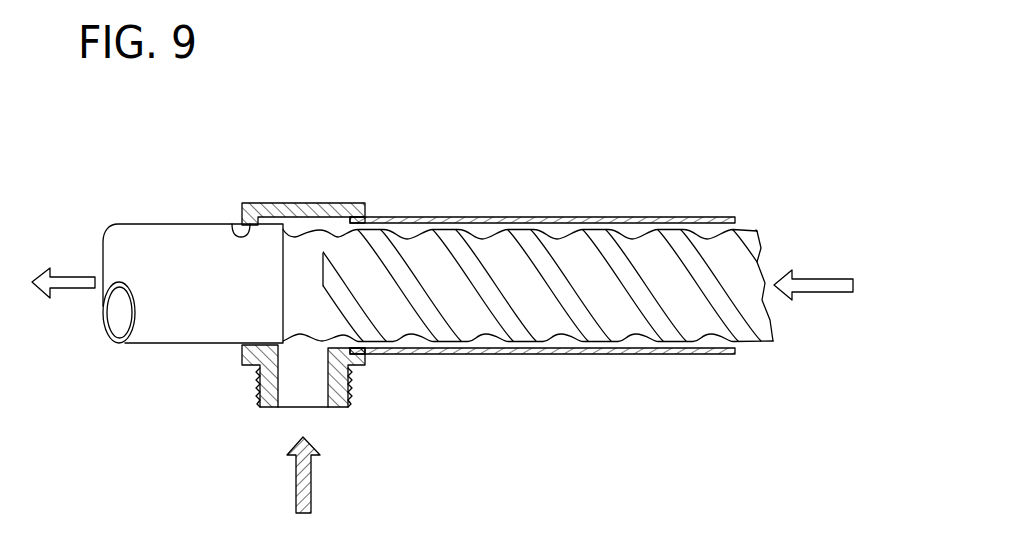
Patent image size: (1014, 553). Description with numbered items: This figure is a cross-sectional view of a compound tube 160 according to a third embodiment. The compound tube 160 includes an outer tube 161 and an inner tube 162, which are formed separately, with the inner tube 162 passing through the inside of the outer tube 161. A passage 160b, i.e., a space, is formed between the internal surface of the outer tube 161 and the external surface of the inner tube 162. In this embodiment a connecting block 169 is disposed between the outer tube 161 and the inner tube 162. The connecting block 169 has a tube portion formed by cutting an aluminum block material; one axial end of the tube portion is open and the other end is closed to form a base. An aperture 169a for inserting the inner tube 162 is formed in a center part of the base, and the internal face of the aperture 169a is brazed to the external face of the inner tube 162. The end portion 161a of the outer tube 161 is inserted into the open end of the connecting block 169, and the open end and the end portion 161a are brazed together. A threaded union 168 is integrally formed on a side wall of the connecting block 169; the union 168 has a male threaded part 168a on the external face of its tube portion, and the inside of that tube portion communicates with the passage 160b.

The compound tube 160 is at (559, 220).
The passage 160b is at (593, 227).
The outer tube 161 is at (407, 217).
The end portion 161a is at (355, 217).
The inner tube 162 is at (178, 240).
The union 168 is at (352, 384).
The male threaded part 168a is at (345, 397).
The connecting block 169 is at (305, 204).
The aperture 169a is at (232, 224).